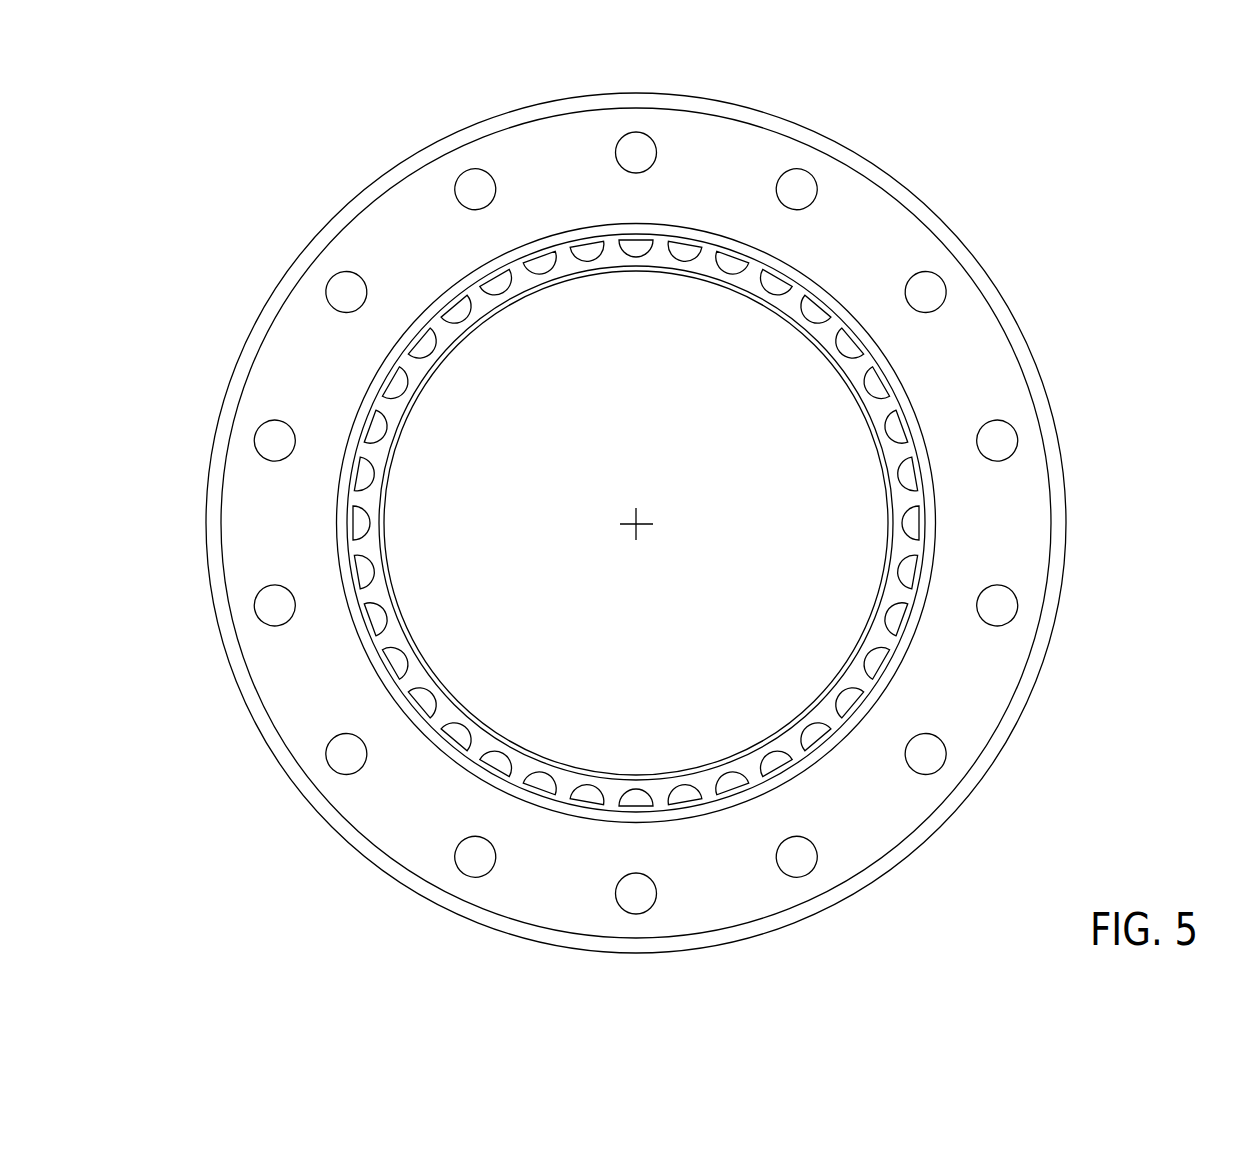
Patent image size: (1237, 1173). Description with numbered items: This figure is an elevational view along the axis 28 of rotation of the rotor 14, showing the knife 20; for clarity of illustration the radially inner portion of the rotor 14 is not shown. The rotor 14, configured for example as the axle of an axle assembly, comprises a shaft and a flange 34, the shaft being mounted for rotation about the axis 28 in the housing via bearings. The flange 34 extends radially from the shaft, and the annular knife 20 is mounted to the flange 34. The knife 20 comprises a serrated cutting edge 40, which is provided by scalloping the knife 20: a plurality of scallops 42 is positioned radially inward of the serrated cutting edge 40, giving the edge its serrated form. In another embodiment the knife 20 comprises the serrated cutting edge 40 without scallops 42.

The rotor 14 is at (1048, 160).
The knife 20 is at (709, 242).
The axis 28 is at (637, 524).
The flange 34 is at (975, 340).
The serrated cutting edge 40 is at (662, 241).
The scallops 42 is at (588, 252).